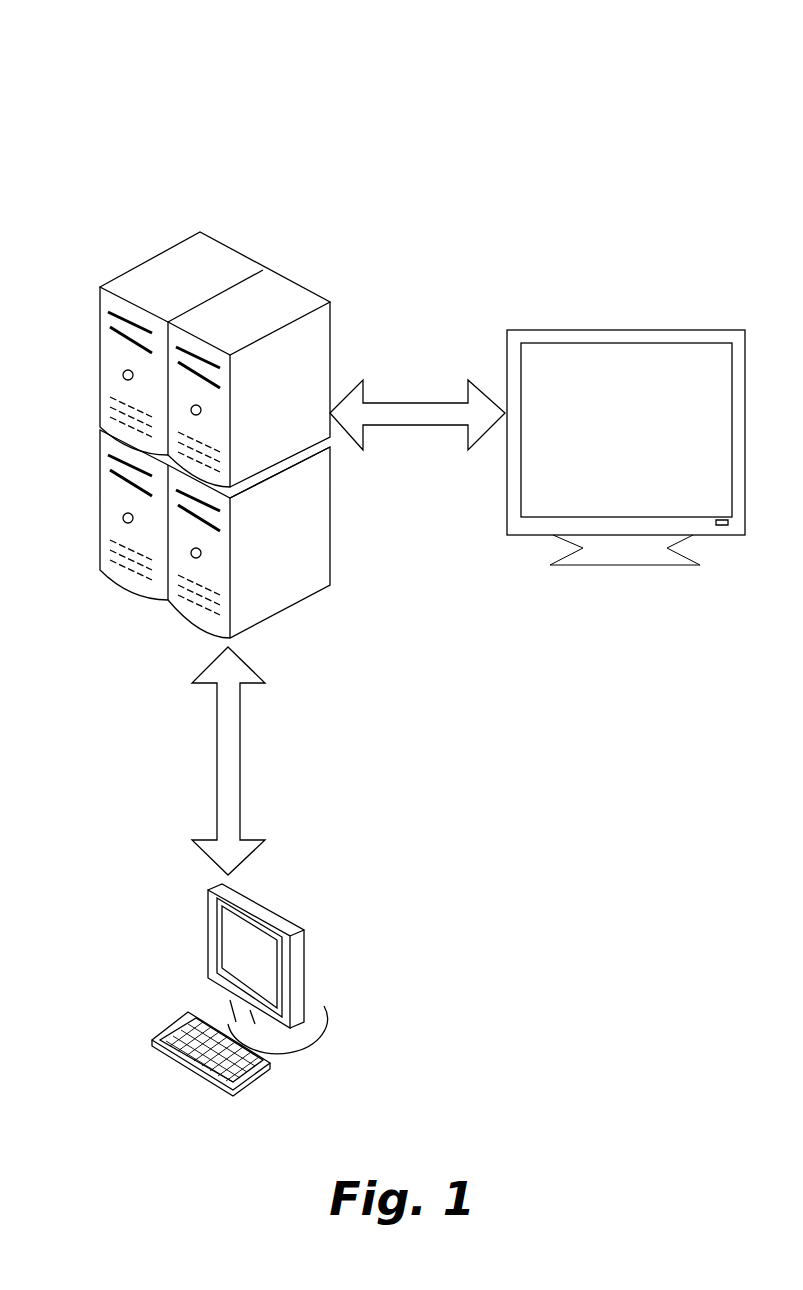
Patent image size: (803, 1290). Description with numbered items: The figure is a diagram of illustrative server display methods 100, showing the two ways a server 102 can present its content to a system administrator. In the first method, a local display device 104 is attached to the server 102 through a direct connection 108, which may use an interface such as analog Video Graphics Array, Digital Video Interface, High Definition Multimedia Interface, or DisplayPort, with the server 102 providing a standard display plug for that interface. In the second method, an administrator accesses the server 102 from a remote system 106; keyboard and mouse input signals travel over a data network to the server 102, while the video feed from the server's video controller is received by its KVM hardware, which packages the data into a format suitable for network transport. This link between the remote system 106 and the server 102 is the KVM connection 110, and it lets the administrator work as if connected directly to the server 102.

The server display methods 100 is at (198, 156).
The server 102 is at (300, 286).
The local display device 104 is at (626, 447).
The remote system 106 is at (207, 930).
The direct connection 108 is at (428, 402).
The KVM connection 110 is at (240, 793).